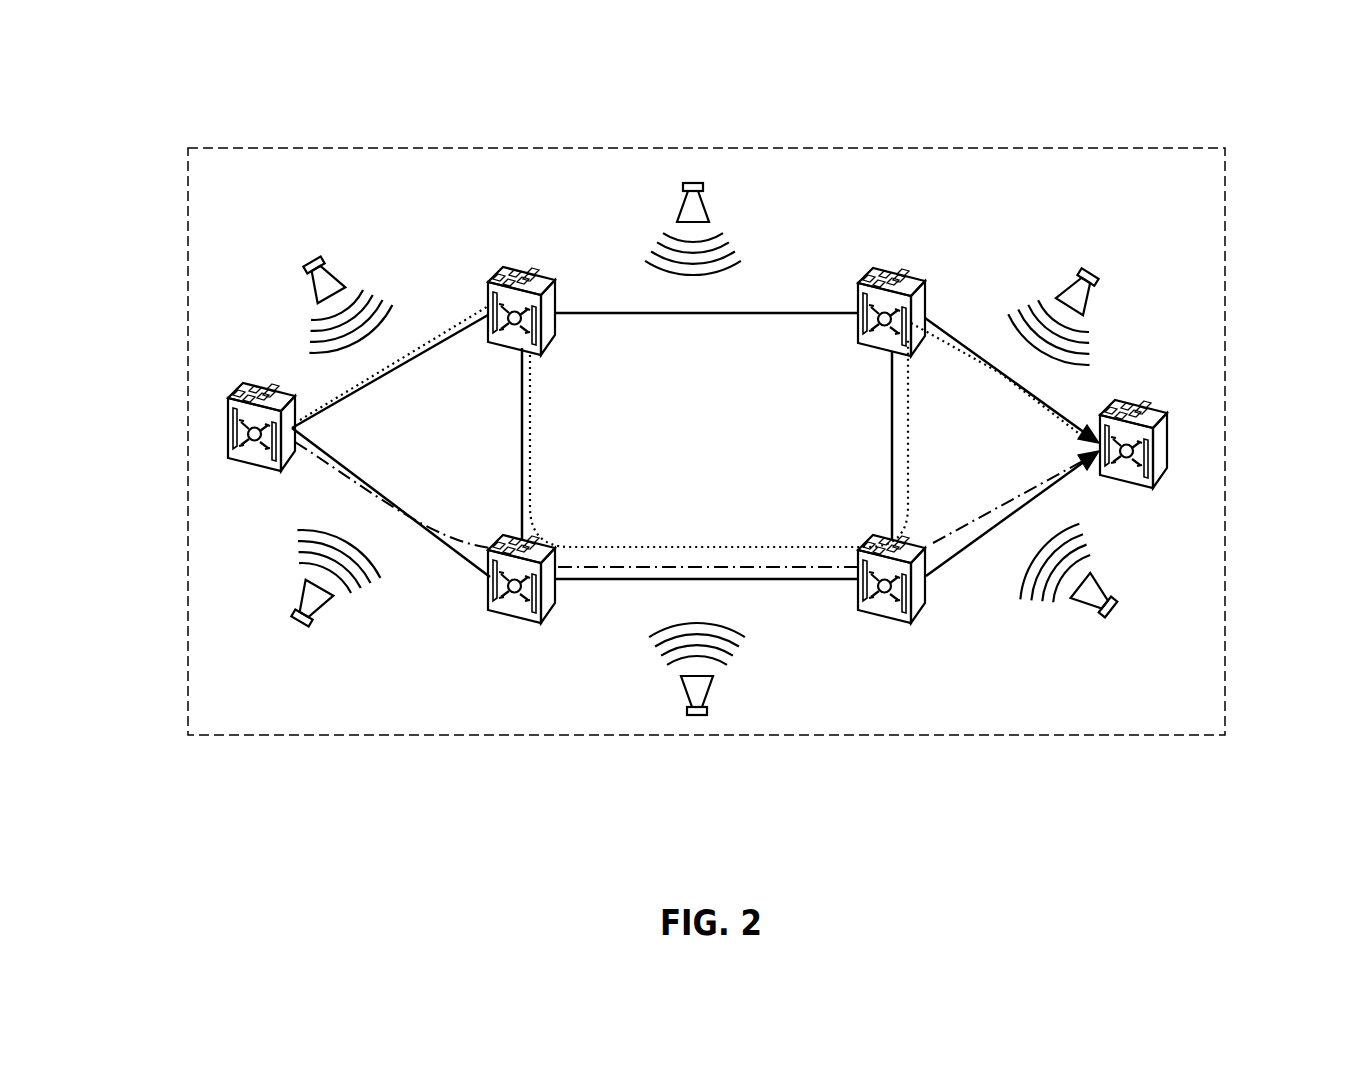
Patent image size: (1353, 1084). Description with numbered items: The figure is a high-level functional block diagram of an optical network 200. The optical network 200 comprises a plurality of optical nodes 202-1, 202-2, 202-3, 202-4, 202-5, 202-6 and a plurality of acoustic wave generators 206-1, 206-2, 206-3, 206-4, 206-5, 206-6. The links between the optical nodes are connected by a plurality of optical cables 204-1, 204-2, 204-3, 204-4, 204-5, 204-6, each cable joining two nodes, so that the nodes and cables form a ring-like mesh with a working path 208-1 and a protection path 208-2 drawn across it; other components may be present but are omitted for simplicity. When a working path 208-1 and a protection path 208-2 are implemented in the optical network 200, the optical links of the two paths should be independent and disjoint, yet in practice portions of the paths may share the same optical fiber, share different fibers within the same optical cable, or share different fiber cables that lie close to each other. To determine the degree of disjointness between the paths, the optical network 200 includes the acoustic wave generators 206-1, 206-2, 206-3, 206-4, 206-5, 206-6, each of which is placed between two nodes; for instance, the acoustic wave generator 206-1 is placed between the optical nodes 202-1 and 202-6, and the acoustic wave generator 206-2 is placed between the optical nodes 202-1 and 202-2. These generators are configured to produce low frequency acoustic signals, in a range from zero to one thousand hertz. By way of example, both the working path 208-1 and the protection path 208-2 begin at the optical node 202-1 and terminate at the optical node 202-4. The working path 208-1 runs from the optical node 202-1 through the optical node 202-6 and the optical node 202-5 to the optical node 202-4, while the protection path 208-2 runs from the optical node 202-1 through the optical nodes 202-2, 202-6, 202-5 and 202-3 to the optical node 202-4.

The optical network 200 is at (163, 116).
The optical node 202-1 is at (228, 430).
The optical node 202-2 is at (520, 268).
The optical node 202-3 is at (885, 268).
The optical node 202-4 is at (1167, 448).
The optical node 202-5 is at (892, 618).
The optical node 202-6 is at (512, 619).
The optical cable 204-1 is at (352, 394).
The optical cable 204-2 is at (790, 313).
The optical cable 204-3 is at (965, 346).
The optical cable 204-4 is at (955, 557).
The optical cable 204-5 is at (800, 581).
The optical cable 204-6 is at (455, 552).
The acoustic wave generator 206-1 is at (296, 621).
The acoustic wave generator 206-2 is at (311, 260).
The acoustic wave generator 206-3 is at (692, 183).
The acoustic wave generator 206-4 is at (1095, 273).
The acoustic wave generator 206-5 is at (1114, 614).
The acoustic wave generator 206-6 is at (690, 716).
The working path 208-1 is at (753, 567).
The protection path 208-2 is at (530, 493).